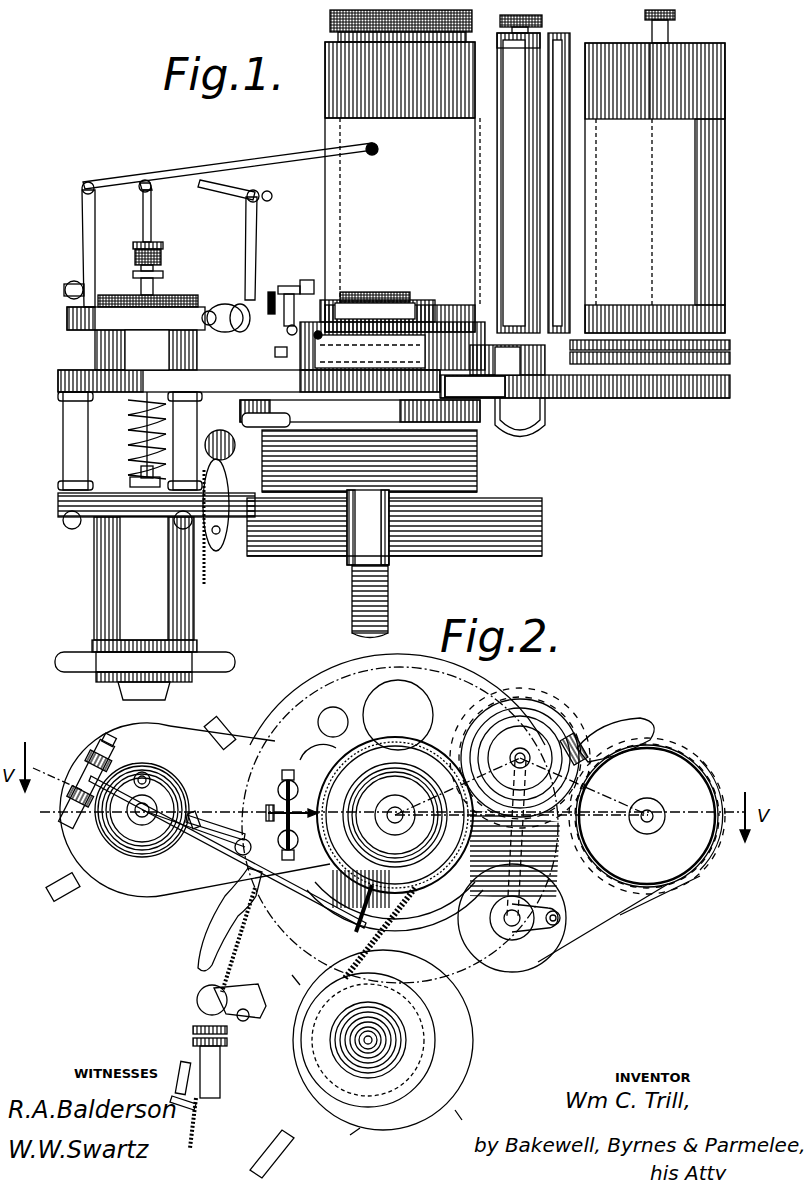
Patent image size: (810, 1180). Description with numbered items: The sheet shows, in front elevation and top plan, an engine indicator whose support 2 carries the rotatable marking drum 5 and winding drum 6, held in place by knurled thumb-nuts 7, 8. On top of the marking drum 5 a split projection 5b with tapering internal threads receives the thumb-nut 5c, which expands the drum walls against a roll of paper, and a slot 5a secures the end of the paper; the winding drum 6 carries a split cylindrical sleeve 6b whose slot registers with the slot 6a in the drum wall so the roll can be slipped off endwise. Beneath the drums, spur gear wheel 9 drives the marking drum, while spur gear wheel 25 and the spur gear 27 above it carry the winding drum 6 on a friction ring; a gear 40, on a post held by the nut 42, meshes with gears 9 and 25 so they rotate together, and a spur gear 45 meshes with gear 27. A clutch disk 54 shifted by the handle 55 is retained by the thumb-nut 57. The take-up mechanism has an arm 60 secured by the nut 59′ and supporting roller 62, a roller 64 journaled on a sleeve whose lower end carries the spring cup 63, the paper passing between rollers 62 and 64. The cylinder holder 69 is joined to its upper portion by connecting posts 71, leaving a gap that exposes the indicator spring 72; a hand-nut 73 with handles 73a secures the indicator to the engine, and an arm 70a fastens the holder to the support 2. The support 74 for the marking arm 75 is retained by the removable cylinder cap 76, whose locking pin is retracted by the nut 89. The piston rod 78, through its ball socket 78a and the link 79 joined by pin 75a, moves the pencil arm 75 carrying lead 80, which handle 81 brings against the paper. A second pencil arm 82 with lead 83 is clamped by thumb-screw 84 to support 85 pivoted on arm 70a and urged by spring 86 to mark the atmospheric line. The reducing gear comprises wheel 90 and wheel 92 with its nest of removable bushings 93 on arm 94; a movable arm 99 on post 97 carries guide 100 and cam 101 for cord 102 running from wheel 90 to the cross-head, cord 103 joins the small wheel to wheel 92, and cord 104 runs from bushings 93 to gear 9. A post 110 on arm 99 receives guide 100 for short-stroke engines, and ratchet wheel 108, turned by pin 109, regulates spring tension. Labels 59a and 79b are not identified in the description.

In FIG. 1, the support 2 is at (620, 398).
In FIG. 2, the support 2 is at (617, 918).
In FIG. 1, the marking drum 5 is at (402, 187).
In FIG. 1, the slot 5a is at (352, 97).
In FIG. 1, the split projection 5b is at (338, 37).
In FIG. 1, the thumb-nut 5c is at (330, 20).
In FIG. 2, the thumb-nut 5c is at (395, 816).
In FIG. 1, the winding drum 6 is at (727, 62).
In FIG. 2, the winding drum 6 is at (647, 816).
In FIG. 1, the slot 6a is at (664, 58).
In FIG. 1, the cylindrical sleeve 6b is at (725, 80).
In FIG. 2, the knurled thumb-nut 7 is at (395, 815).
In FIG. 1, the knurled thumb-nut 8 is at (675, 16).
In FIG. 2, the knurled thumb-nut 8 is at (660, 824).
In FIG. 1, the spur gear wheel 9 is at (475, 386).
In FIG. 2, the spur gear wheel 9 is at (398, 738).
In FIG. 1, the spur gear wheel 25 is at (730, 358).
In FIG. 1, the spur gear 27 is at (730, 345).
In FIG. 2, the spur gear 27 is at (716, 846).
In FIG. 2, the gear 40 is at (520, 737).
In FIG. 1, the nut 42 is at (532, 428).
In FIG. 2, the spur gear 45 is at (508, 706).
In FIG. 2, the washer or disk 54 is at (548, 735).
In FIG. 2, the handle 55 is at (620, 742).
In FIG. 2, the thumb-nut 57 is at (528, 750).
In FIG. 1, the nut 59′ is at (540, 22).
In FIG. 2, the crank arm 59a is at (528, 905).
In FIG. 1, the arm 60 is at (528, 38).
In FIG. 1, the roller 62 is at (570, 105).
In FIG. 2, the roller 62 is at (553, 927).
In FIG. 1, the spring cup 63 is at (507, 360).
In FIG. 1, the roller 64 is at (518, 183).
In FIG. 2, the roller 64 is at (512, 918).
In FIG. 1, the cylinder holder 69 is at (144, 578).
In FIG. 1, the arm 70a is at (249, 449).
In FIG. 2, the arm 70a is at (364, 842).
In FIG. 1, the connecting posts 71 is at (63, 437).
In FIG. 1, the indicator spring 72 is at (130, 424).
In FIG. 1, the hand-nut 73 is at (92, 648).
In FIG. 1, the handles 73a is at (87, 672).
In FIG. 2, the handles 73a is at (68, 902).
In FIG. 1, the support 74 is at (136, 338).
In FIG. 2, the support 74 is at (97, 834).
In FIG. 1, the marking arm 75 is at (238, 170).
In FIG. 2, the marking arm 75 is at (232, 860).
In FIG. 1, the pin 75a is at (146, 179).
In FIG. 1, the cylinder cap 76 is at (184, 295).
In FIG. 2, the cylinder cap 76 is at (178, 793).
In FIG. 1, the piston rod 78 is at (130, 442).
In FIG. 1, the socket or seat 78a is at (162, 262).
In FIG. 1, the link 79 is at (151, 228).
In FIG. 1, the collar 79b is at (163, 246).
In FIG. 2, the collar 79b is at (150, 802).
In FIG. 1, the lead 80 is at (378, 152).
In FIG. 2, the lead 80 is at (364, 893).
In FIG. 1, the handle 81 is at (226, 318).
In FIG. 2, the handle 81 is at (206, 940).
In FIG. 1, the second pencil arm 82 is at (290, 286).
In FIG. 2, the second pencil arm 82 is at (292, 815).
In FIG. 1, the lead 83 is at (312, 280).
In FIG. 1, the thumb-screw 84 is at (270, 292).
In FIG. 1, the support 85 is at (288, 333).
In FIG. 1, the spring 86 is at (275, 352).
In FIG. 2, the nut 89 is at (143, 772).
In FIG. 1, the wheel 90 is at (542, 552).
In FIG. 2, the wheel 90 is at (322, 700).
In FIG. 1, the wheel 92 is at (478, 488).
In FIG. 1, the nest of removable bushings 93 is at (377, 307).
In FIG. 2, the nest of removable bushings 93 is at (364, 1046).
In FIG. 1, the arm 94 is at (360, 413).
In FIG. 2, the arm 94 is at (420, 912).
In FIG. 1, the post 97 is at (352, 597).
In FIG. 1, the movable arm 99 is at (286, 545).
In FIG. 1, the guide 100 is at (226, 545).
In FIG. 2, the guide 100 is at (222, 1077).
In FIG. 1, the cam 101 is at (219, 431).
In FIG. 2, the cam 101 is at (208, 1102).
In FIG. 1, the cord 102 is at (207, 578).
In FIG. 1, the cord 103 is at (478, 460).
In FIG. 1, the cord 104 is at (322, 345).
In FIG. 2, the cord 104 is at (347, 960).
In FIG. 2, the ratchet wheel 108 is at (476, 1044).
In FIG. 2, the pin 109 is at (262, 1158).
In FIG. 2, the post 110 is at (198, 1002).